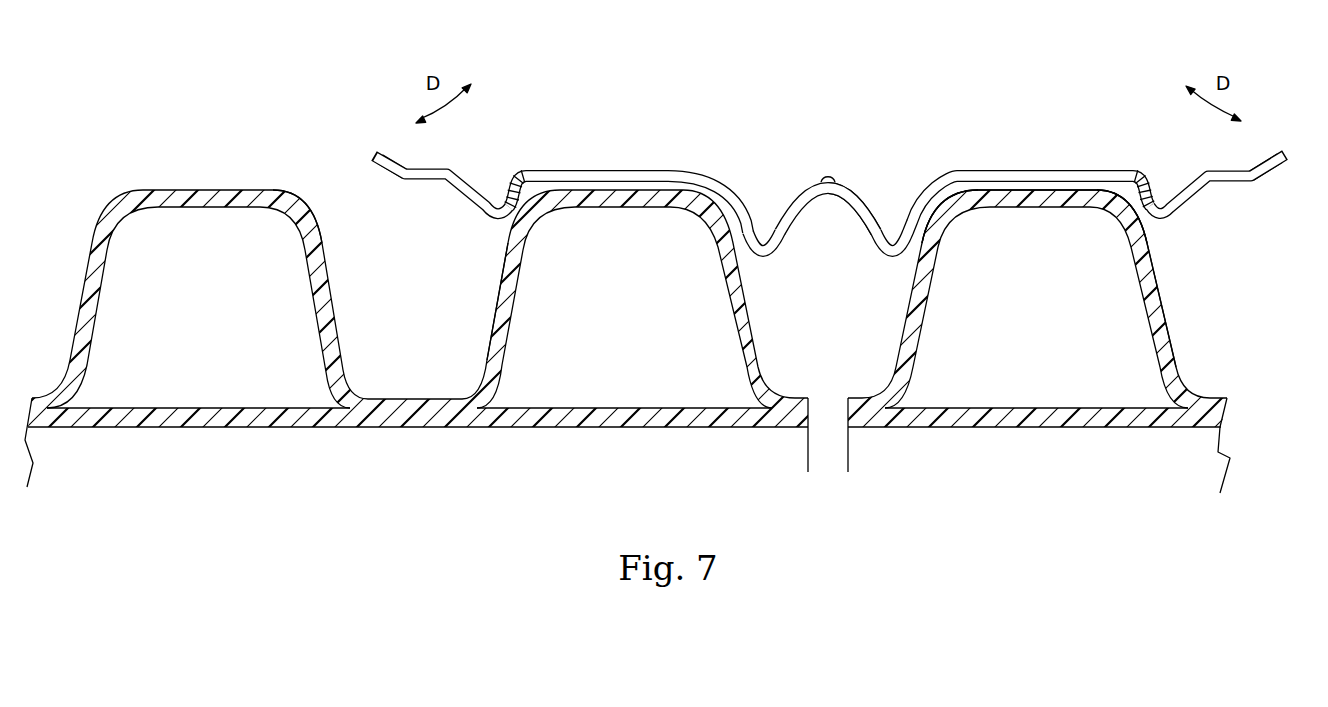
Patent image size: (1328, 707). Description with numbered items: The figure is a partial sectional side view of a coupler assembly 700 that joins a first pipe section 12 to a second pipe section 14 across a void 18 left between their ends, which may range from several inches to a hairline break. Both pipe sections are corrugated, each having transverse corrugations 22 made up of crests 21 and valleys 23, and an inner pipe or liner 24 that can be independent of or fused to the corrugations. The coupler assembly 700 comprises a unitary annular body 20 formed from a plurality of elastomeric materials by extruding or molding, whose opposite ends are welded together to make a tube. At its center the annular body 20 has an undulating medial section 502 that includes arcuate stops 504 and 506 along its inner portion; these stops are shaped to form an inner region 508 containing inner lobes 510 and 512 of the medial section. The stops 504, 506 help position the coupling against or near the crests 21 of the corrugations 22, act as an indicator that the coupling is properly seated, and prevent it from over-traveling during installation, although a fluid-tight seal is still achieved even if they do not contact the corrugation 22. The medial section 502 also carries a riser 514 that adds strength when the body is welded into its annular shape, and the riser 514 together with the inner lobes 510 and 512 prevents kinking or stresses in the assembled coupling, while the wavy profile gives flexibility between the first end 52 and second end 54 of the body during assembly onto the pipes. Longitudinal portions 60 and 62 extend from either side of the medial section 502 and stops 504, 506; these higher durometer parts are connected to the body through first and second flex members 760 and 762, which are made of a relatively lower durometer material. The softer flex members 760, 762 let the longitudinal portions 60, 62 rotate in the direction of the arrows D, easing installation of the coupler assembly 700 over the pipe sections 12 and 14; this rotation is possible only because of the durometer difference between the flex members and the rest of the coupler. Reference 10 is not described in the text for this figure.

The vehicle structure 10 is at (1128, 76).
The first pipe section 12 is at (211, 190).
The second pipe section 14 is at (1158, 260).
The void 18 is at (840, 461).
The annular body 20 is at (1053, 168).
The crest 21 is at (296, 199).
The corrugation 22 is at (494, 312).
The valley 23 is at (413, 397).
The inner pipe or liner 24 is at (1033, 429).
The first end 52 is at (372, 153).
The second end 54 is at (1287, 153).
The longitudinal portion 60 is at (398, 162).
The longitudinal portion 62 is at (1261, 155).
The undulating medial section 502 is at (857, 187).
The arcuate stop 504 is at (930, 226).
The arcuate stop 506 is at (712, 225).
The inner region 508 is at (840, 235).
The inner lobe 510 is at (774, 257).
The inner lobe 512 is at (888, 257).
The riser 514 is at (804, 187).
The coupler assembly 700 is at (909, 77).
The first flex member 760 is at (516, 175).
The second flex member 762 is at (1146, 175).